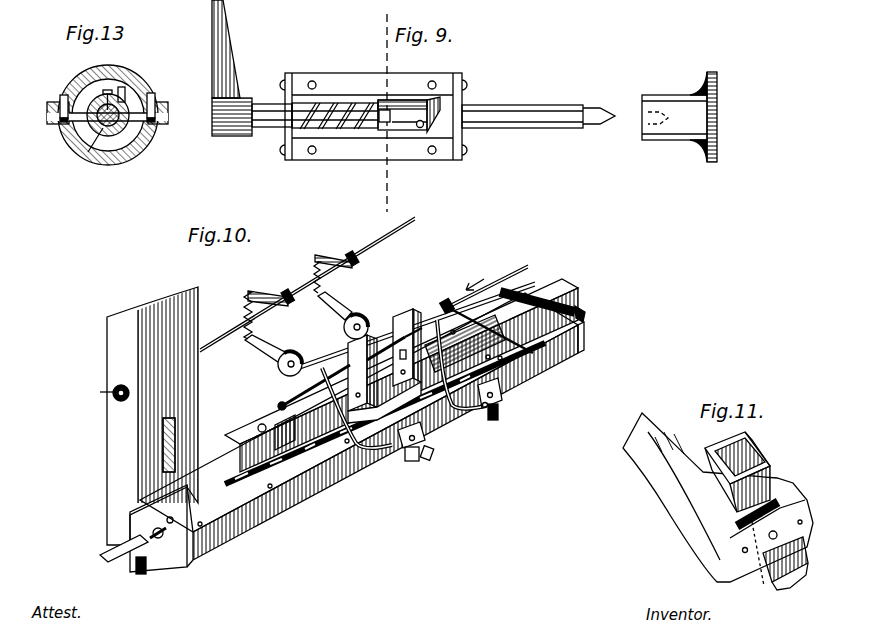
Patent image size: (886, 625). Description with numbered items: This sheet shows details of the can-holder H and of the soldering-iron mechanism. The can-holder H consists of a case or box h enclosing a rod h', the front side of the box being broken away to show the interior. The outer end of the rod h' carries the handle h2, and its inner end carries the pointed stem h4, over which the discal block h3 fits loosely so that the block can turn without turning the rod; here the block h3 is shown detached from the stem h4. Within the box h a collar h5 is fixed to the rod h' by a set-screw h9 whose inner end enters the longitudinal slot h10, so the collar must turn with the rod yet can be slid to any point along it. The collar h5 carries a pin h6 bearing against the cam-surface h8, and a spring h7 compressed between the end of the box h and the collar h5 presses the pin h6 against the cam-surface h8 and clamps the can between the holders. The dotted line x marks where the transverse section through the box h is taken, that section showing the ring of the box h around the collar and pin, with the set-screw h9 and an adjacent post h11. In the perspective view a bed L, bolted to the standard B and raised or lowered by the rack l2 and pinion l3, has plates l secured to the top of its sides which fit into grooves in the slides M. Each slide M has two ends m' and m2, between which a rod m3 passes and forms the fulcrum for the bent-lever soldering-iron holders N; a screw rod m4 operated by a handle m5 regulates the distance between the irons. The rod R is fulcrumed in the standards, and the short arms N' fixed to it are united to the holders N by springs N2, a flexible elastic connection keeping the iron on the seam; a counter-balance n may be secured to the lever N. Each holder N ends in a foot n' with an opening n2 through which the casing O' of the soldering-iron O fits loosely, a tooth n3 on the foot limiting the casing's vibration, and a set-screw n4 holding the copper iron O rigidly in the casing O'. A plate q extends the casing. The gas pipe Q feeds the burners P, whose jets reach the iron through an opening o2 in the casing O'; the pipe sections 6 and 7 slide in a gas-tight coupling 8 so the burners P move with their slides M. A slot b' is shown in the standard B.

In FIG. 13, the case or box h is at (119, 115).
In FIG. 9, the case or box h is at (355, 71).
In FIG. 13, the rod h' is at (94, 162).
In FIG. 9, the rod h' is at (522, 105).
In FIG. 9, the handle h2 is at (236, 40).
In FIG. 9, the discal block or plate h3 is at (692, 112).
In FIG. 9, the stem h4 is at (594, 108).
In FIG. 13, the collar h5 is at (95, 132).
In FIG. 9, the collar h5 is at (400, 108).
In FIG. 13, the pin h6 is at (142, 80).
In FIG. 9, the pin h6 is at (422, 128).
In FIG. 13, the spring h7 is at (142, 140).
In FIG. 9, the spring h7 is at (330, 130).
In FIG. 9, the cam-surface h8 is at (432, 118).
In FIG. 13, the set-screw h9 is at (100, 90).
In FIG. 9, the set-screw h9 is at (385, 110).
In FIG. 9, the slot h10 is at (274, 104).
In FIG. 13, the post h11 is at (126, 70).
In FIG. 9, the can-holder H is at (373, 100).
In FIG. 9, the section line x is at (386, 113).
In FIG. 10, the rod R is at (253, 308).
In FIG. 10, the standard B is at (118, 404).
In FIG. 10, the slot b' is at (197, 434).
In FIG. 10, the bed L is at (165, 532).
In FIG. 10, the plate l is at (212, 503).
In FIG. 10, the rack l2 is at (120, 545).
In FIG. 10, the pinion l3 is at (134, 562).
In FIG. 10, the slide M is at (335, 470).
In FIG. 10, the end of slide m' is at (391, 360).
In FIG. 10, the end or upright of slide m2 is at (384, 366).
In FIG. 10, the rod m3 is at (309, 387).
In FIG. 10, the rod m4 is at (259, 432).
In FIG. 10, the handle m5 is at (146, 542).
In FIG. 10, the soldering-iron holder N is at (313, 340).
In FIG. 11, the soldering-iron holder N is at (718, 497).
In FIG. 10, the short lever or arm N' is at (303, 270).
In FIG. 10, the spring N2 is at (246, 305).
In FIG. 10, the counter-balance n is at (324, 343).
In FIG. 10, the foot n' is at (460, 443).
In FIG. 11, the foot n' is at (773, 553).
In FIG. 11, the opening n2 is at (773, 512).
In FIG. 11, the tooth or flange n3 is at (793, 490).
In FIG. 10, the set-screw n4 is at (485, 410).
In FIG. 11, the set-screw n4 is at (780, 570).
In FIG. 10, the pipe section 6 is at (432, 318).
In FIG. 10, the pipe section 7 is at (328, 374).
In FIG. 10, the gas-tight coupling 8 is at (383, 343).
In FIG. 10, the gas or gasoline pipe Q is at (530, 262).
In FIG. 10, the heater or burner P is at (370, 448).
In FIG. 10, the soldering-iron O is at (463, 423).
In FIG. 11, the soldering-iron O is at (757, 517).
In FIG. 11, the casing O' is at (802, 504).
In FIG. 10, the opening o2 is at (432, 456).
In FIG. 11, the block edge q is at (754, 436).